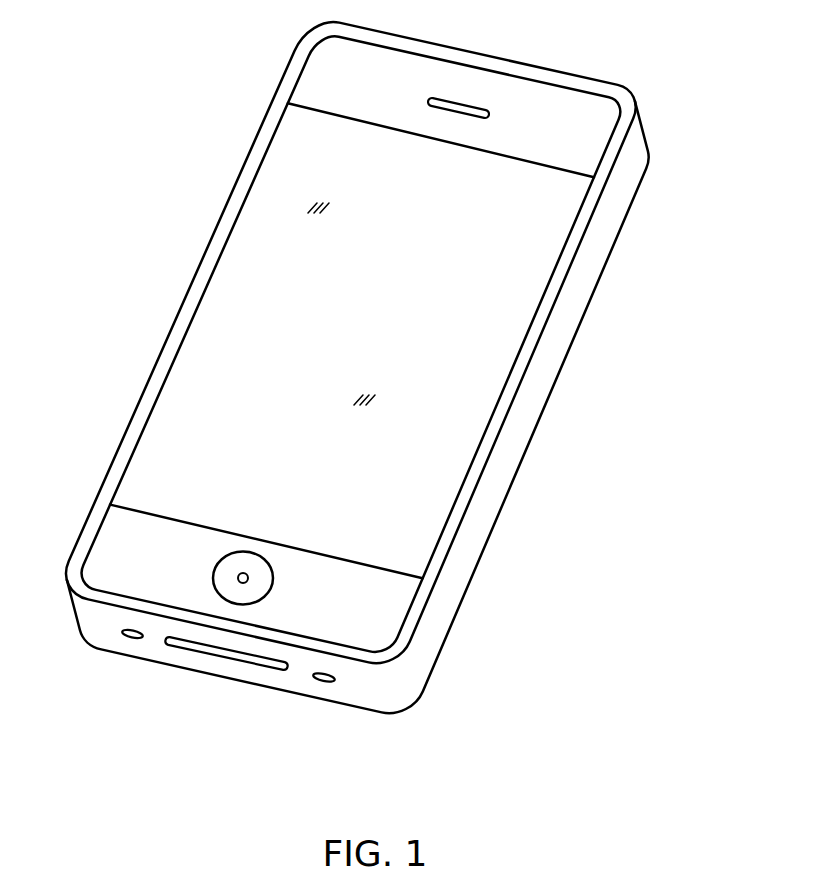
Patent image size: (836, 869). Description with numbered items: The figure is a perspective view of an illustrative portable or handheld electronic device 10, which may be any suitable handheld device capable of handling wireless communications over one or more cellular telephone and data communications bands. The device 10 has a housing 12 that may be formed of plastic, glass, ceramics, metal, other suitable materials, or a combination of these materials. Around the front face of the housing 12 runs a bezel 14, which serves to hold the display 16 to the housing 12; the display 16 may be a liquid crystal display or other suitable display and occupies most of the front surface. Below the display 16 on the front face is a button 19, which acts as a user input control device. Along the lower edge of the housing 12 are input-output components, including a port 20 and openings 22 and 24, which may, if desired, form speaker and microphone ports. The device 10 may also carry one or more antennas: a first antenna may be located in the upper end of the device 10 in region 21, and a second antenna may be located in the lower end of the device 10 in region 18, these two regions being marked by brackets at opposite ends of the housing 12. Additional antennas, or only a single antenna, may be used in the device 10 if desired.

The electronic device 10 is at (686, 64).
The housing 12 is at (480, 515).
The bezel 14 is at (205, 262).
The display 16 is at (558, 203).
The region 18 is at (53, 540).
The button 19 is at (232, 600).
The port 20 is at (263, 668).
The region 21 is at (676, 154).
The opening 22 is at (132, 638).
The opening 24 is at (323, 682).